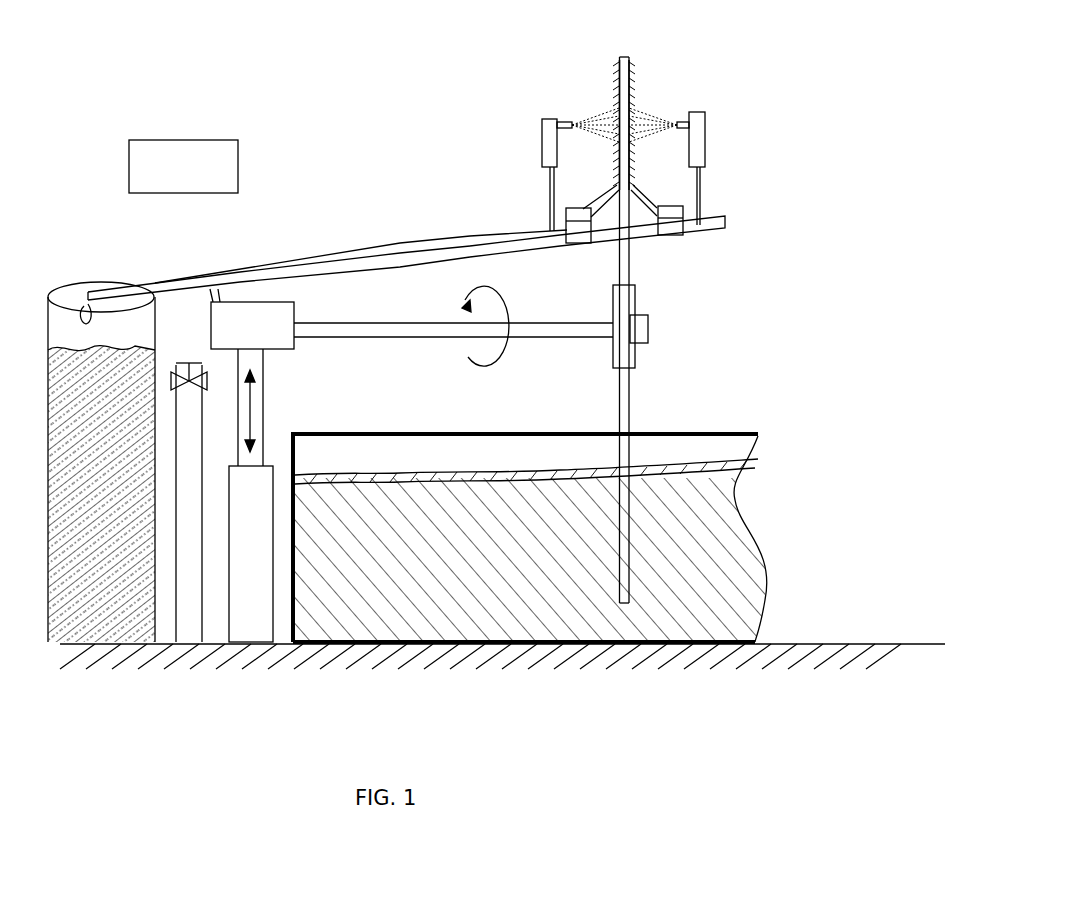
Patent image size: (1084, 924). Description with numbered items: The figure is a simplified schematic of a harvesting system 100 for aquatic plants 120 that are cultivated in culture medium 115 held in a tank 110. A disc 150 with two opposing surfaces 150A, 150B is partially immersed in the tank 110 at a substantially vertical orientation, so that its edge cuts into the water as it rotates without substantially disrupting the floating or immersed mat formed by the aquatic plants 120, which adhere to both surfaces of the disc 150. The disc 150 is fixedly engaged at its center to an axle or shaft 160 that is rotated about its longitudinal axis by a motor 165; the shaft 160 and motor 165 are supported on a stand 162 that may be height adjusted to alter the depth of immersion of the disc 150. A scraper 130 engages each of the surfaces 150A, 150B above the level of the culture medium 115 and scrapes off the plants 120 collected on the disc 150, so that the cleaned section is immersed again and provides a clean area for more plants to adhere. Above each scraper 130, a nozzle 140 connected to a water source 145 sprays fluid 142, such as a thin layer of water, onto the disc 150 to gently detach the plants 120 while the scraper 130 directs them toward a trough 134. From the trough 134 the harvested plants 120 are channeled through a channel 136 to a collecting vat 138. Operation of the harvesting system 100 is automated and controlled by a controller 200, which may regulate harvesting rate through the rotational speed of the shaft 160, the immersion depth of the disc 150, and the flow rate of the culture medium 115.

The harvesting system 100 is at (298, 107).
The tank 110 is at (737, 432).
The culture medium 115 is at (478, 565).
The aquatic plants 120 is at (127, 478).
The scraper 130 is at (590, 203).
The trough 134 is at (703, 227).
The channel 136 is at (477, 243).
The collecting vat 138 is at (86, 284).
The nozzle 140 is at (542, 143).
The fluid 142 is at (648, 115).
The water source 145 is at (175, 405).
The disc 150 is at (625, 57).
The first surface of disc 150A is at (617, 72).
The second surface of disc 150B is at (633, 72).
The shaft 160 is at (330, 337).
The stand 162 is at (267, 433).
The motor 165 is at (295, 317).
The controller 200 is at (238, 178).